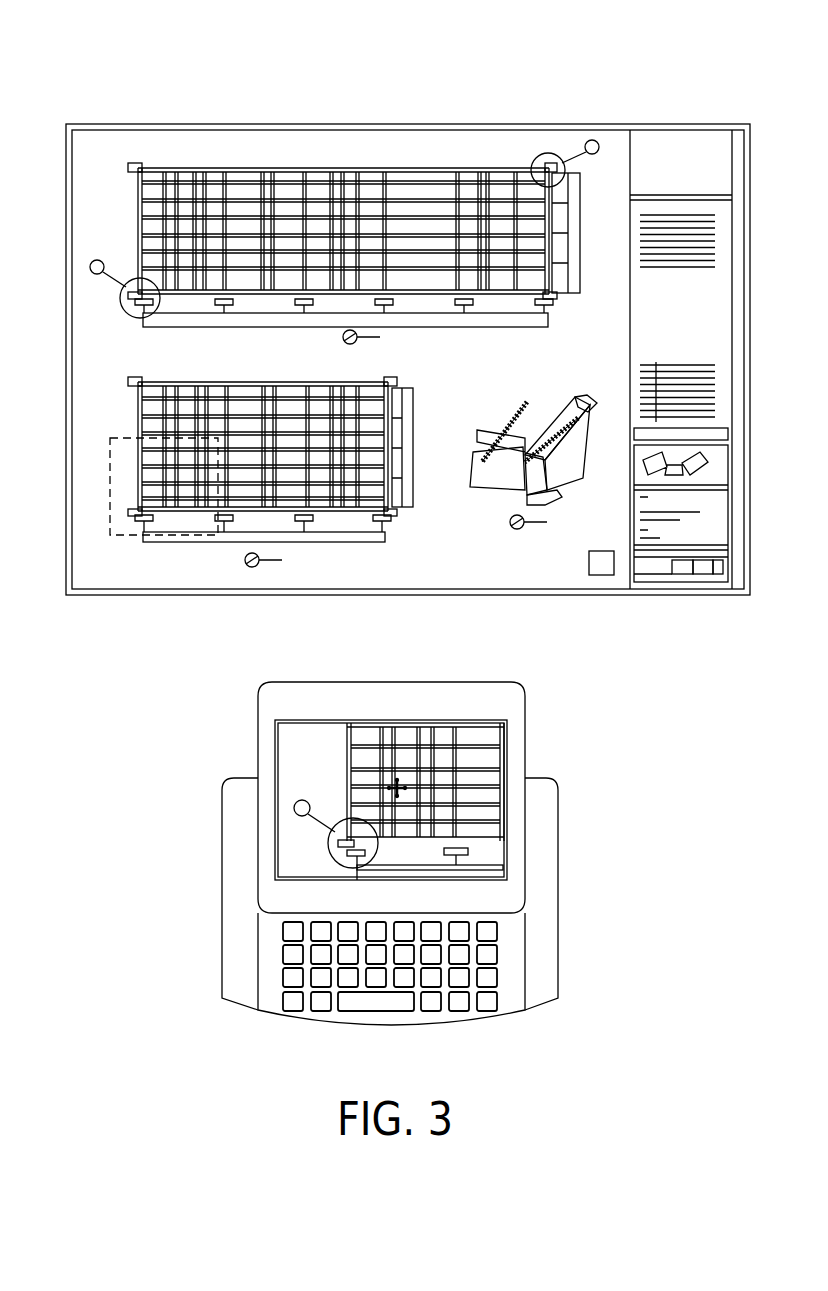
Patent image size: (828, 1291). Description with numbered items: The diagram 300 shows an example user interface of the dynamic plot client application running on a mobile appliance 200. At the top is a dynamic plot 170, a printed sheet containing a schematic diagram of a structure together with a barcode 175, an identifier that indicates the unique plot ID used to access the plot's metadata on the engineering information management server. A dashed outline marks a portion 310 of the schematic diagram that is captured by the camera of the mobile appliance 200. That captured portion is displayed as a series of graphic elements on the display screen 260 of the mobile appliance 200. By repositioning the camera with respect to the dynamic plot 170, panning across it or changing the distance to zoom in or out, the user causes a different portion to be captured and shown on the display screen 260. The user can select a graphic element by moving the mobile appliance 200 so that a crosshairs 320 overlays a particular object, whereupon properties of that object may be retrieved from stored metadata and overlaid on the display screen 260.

The diagram 300 is at (695, 43).
The dynamic plot 170 is at (115, 162).
The portion 310 is at (117, 437).
The barcode 175 is at (588, 556).
The mobile appliance 200 is at (544, 833).
The display screen 260 is at (325, 759).
The crosshairs 320 is at (402, 785).